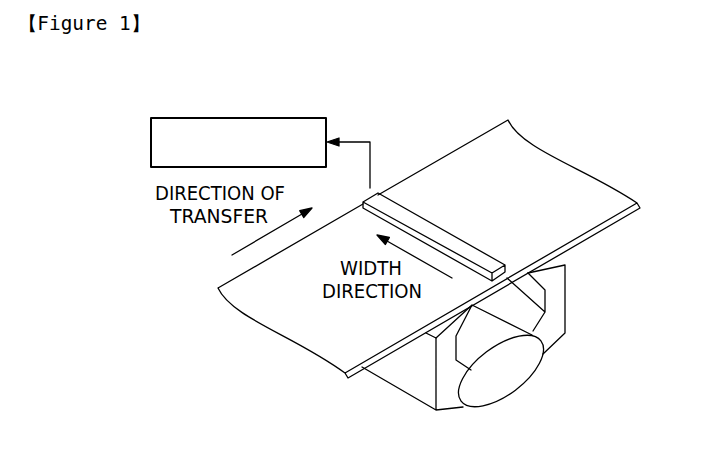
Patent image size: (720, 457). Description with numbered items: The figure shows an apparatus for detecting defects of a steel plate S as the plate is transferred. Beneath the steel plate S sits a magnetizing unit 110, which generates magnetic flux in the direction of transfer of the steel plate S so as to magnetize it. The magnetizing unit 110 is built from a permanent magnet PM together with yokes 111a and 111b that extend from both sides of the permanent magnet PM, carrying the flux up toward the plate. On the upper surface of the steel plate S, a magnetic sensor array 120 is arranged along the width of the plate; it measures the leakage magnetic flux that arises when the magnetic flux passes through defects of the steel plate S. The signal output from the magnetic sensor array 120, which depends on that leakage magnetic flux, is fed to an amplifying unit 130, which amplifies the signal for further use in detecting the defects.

The magnetizing unit 110 is at (521, 338).
The yoke 111a is at (402, 363).
The yoke 111b is at (558, 295).
The magnetic sensor array 120 is at (430, 230).
The amplifying unit 130 is at (303, 117).
The steel plate S is at (535, 165).
The permanent magnet PM is at (502, 377).